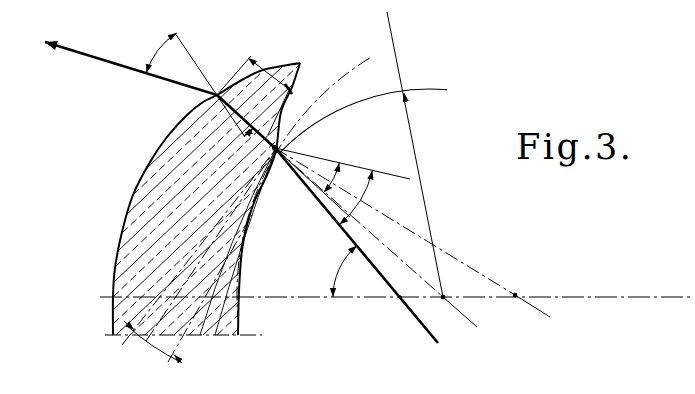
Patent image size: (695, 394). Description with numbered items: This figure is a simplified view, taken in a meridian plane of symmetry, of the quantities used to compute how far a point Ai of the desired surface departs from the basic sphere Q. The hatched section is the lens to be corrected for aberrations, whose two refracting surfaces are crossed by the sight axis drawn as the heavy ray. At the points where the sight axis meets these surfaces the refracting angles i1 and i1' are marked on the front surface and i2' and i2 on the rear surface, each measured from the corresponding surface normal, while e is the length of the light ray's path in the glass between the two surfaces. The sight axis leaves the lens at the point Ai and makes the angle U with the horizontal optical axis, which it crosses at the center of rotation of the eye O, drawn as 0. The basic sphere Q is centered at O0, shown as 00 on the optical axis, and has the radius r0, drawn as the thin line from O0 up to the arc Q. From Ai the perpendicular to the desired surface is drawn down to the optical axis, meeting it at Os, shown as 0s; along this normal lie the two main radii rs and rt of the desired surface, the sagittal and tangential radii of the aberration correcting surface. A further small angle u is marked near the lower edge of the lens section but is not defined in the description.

The refracting angle i1 is at (154, 53).
The refracting angle i1' is at (228, 133).
The path length of light ray in the glass e is at (254, 85).
The point of the desired surface Ai is at (278, 145).
The refracting angle i2 is at (355, 179).
The refracting angle i2' is at (313, 191).
The radius of the basic sphere r0 is at (415, 154).
The basic sphere Q is at (447, 89).
The angle of sight axis with the horizontal U is at (338, 271).
The sagittal radius rs is at (412, 232).
The tangential radius rt is at (389, 237).
The center of rotation of the eye 0 is at (396, 306).
The center of the basic sphere 00 is at (449, 309).
The intersection of optical axis with perpendicular at Ai 0s is at (522, 308).
The center of rotation of the eye O is at (399, 296).
The center of the basic sphere O0 is at (443, 297).
The intersection of optical axis with perpendicular at Ai Os is at (515, 295).
The angle between ray lines at exit point u is at (198, 257).